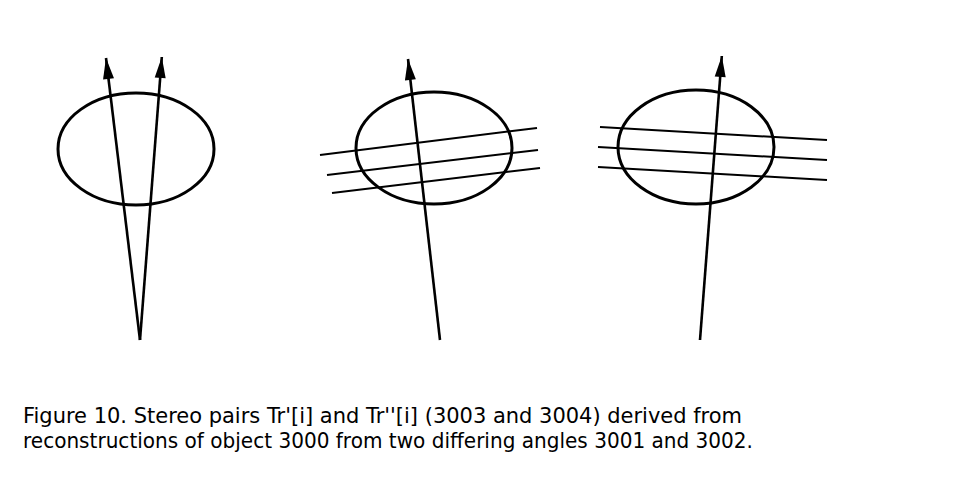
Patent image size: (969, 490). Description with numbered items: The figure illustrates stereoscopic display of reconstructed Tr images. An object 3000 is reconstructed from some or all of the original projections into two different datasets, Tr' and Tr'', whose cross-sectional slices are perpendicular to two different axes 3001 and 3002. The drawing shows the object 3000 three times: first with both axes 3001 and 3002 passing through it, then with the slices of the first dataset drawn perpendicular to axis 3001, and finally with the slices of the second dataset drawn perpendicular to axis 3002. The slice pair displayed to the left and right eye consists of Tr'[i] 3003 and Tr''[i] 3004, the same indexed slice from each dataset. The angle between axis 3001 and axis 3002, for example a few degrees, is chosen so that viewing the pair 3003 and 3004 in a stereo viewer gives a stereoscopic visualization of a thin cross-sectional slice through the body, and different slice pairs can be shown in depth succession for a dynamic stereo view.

The object 3000 is at (195, 170).
The first axis 3001 is at (86, 52).
The second axis 3002 is at (188, 40).
The slice pair Tr'[i] 3003 is at (349, 197).
The slice pair Tr''[i] 3004 is at (795, 188).